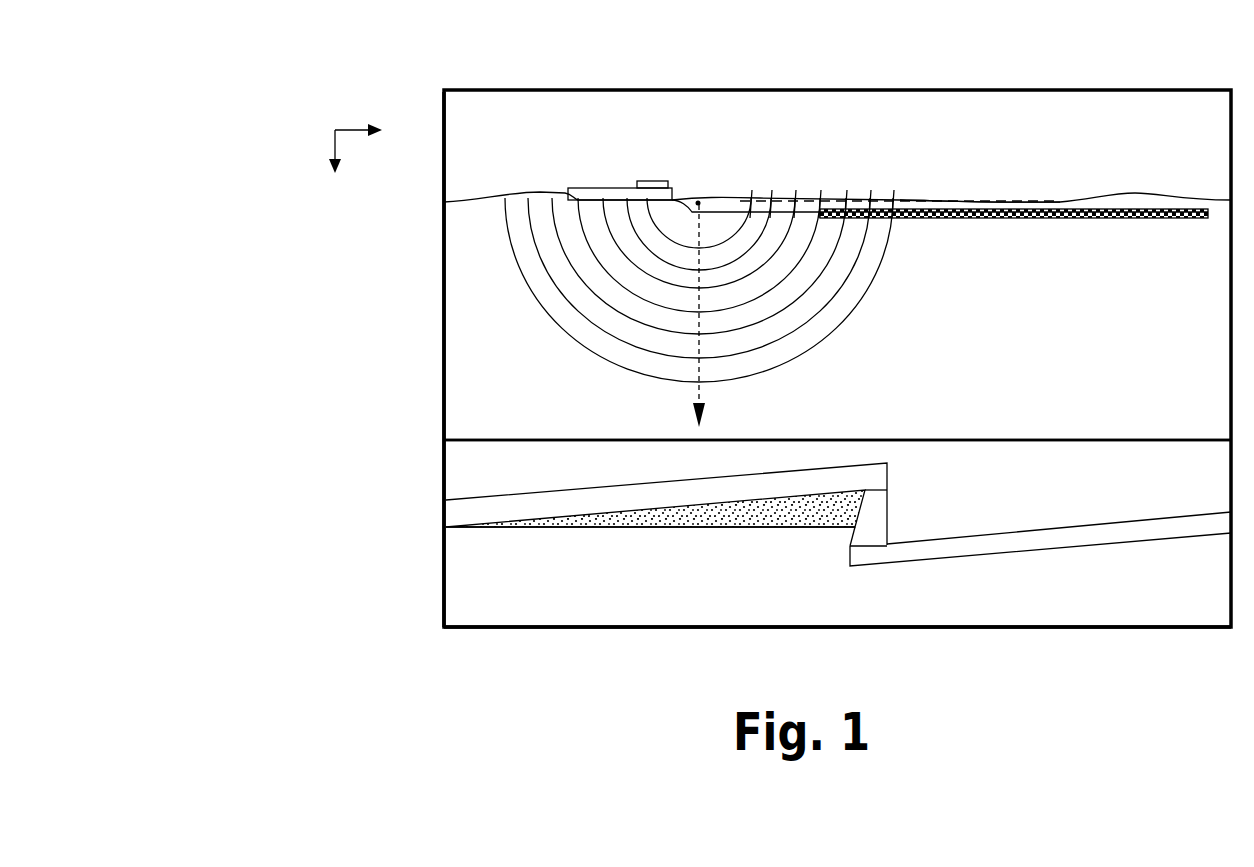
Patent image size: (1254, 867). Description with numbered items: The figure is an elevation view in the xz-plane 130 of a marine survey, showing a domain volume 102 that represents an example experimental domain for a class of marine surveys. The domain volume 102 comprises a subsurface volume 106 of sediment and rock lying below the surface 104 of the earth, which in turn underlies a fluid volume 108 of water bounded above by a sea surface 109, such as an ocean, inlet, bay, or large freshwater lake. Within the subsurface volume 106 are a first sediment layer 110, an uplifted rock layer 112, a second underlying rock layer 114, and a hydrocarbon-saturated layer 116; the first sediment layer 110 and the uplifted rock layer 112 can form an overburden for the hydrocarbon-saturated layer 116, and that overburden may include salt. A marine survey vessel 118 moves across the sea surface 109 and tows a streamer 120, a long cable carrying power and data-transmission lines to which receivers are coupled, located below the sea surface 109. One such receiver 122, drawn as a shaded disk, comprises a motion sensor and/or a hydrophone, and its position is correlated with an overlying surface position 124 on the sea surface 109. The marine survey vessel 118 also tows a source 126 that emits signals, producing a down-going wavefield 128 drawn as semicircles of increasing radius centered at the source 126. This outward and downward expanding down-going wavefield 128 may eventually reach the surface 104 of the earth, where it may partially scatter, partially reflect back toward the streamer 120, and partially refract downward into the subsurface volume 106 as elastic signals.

The domain volume 102 is at (345, 262).
The surface of the earth 104 is at (500, 440).
The subsurface volume 106 is at (465, 458).
The fluid volume 108 is at (465, 345).
The sea surface 109 is at (968, 198).
The first sediment layer 110 is at (1096, 503).
The uplifted rock layer 112 is at (465, 517).
The second underlying rock layer 114 is at (567, 615).
The hydrocarbon-saturated layer 116 is at (665, 528).
The marine survey vessel 118 is at (610, 188).
The streamer 120 is at (1024, 258).
The receiver 122 is at (1133, 218).
The surface position 124 is at (1133, 200).
The source 126 is at (698, 203).
The down-going wavefield 128 is at (861, 298).
The xz-plane 130 is at (335, 130).